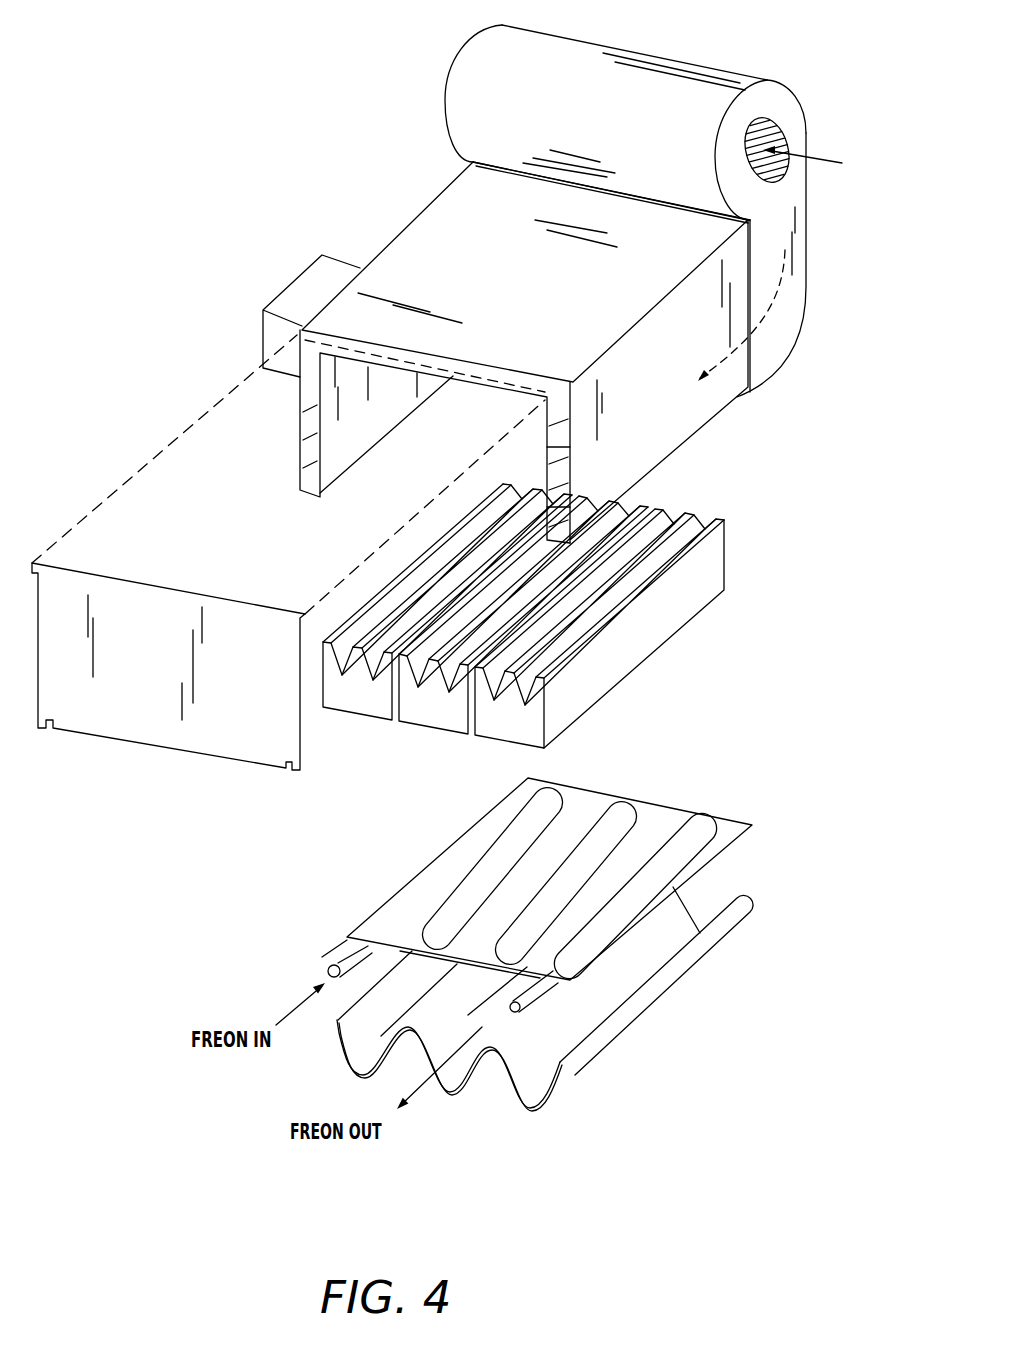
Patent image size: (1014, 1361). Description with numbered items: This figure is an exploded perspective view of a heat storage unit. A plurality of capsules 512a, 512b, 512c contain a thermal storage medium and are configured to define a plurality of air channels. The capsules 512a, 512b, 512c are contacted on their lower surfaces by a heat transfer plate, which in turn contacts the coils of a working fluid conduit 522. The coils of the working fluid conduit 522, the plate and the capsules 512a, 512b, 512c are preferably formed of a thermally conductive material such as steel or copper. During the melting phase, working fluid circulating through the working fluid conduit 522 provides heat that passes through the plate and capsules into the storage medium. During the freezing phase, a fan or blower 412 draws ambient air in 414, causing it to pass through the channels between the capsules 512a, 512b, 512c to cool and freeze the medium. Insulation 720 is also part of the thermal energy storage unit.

The fan or blower 412 is at (677, 80).
The ambient air in 414 is at (828, 160).
The insulation 720 is at (296, 383).
The capsule 512a is at (338, 712).
The capsule 512b is at (430, 727).
The capsule 512c is at (495, 742).
The working fluid conduit 522 is at (330, 966).